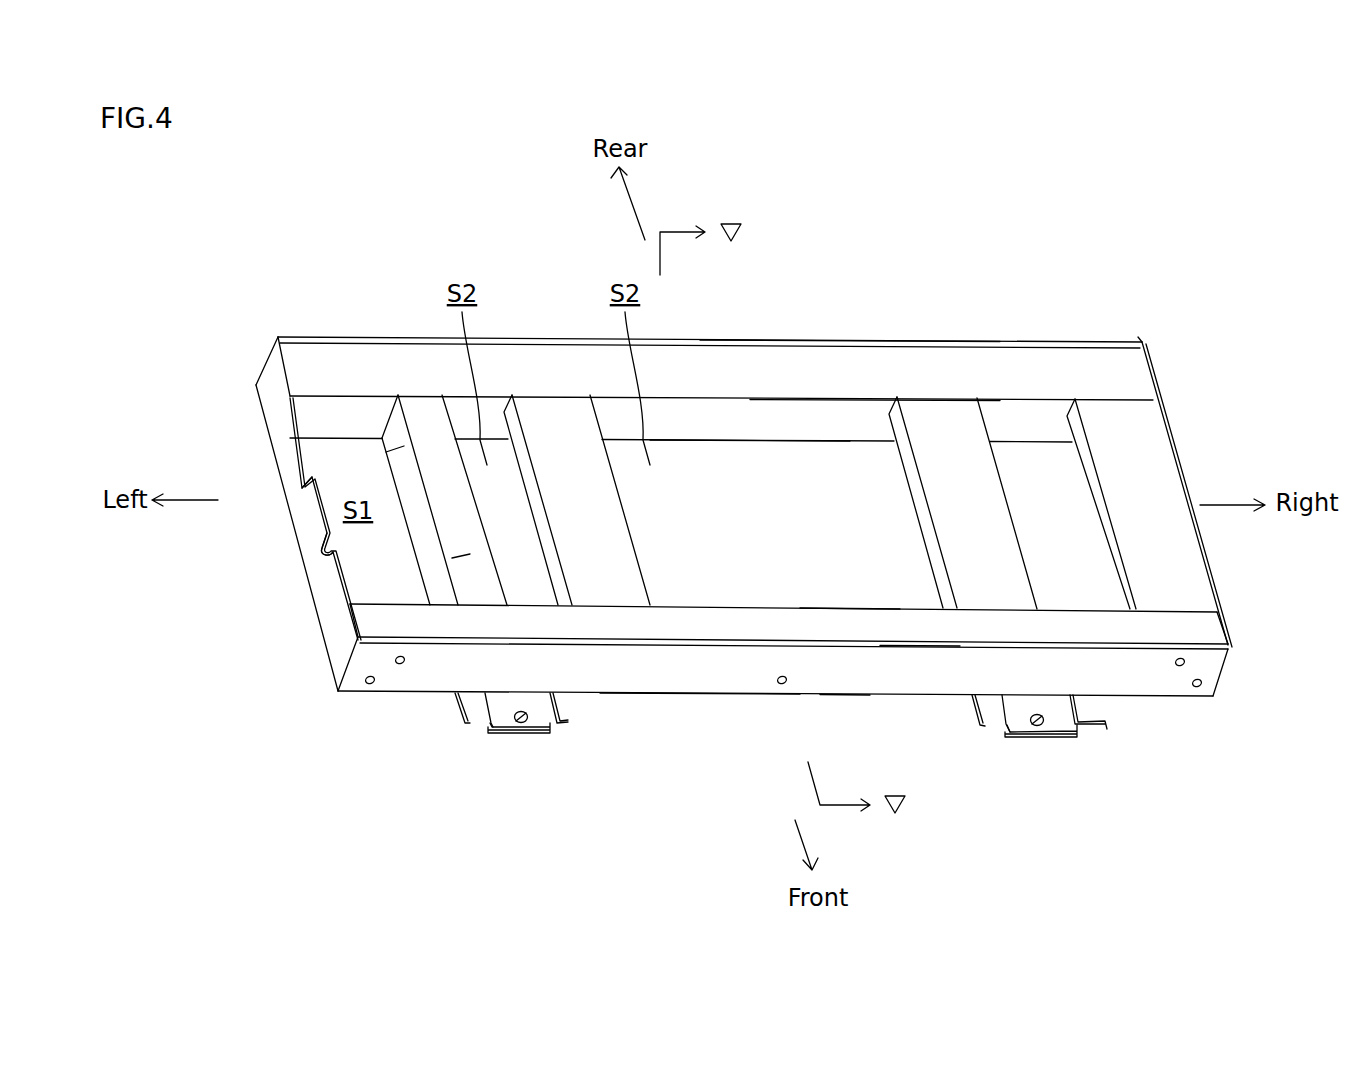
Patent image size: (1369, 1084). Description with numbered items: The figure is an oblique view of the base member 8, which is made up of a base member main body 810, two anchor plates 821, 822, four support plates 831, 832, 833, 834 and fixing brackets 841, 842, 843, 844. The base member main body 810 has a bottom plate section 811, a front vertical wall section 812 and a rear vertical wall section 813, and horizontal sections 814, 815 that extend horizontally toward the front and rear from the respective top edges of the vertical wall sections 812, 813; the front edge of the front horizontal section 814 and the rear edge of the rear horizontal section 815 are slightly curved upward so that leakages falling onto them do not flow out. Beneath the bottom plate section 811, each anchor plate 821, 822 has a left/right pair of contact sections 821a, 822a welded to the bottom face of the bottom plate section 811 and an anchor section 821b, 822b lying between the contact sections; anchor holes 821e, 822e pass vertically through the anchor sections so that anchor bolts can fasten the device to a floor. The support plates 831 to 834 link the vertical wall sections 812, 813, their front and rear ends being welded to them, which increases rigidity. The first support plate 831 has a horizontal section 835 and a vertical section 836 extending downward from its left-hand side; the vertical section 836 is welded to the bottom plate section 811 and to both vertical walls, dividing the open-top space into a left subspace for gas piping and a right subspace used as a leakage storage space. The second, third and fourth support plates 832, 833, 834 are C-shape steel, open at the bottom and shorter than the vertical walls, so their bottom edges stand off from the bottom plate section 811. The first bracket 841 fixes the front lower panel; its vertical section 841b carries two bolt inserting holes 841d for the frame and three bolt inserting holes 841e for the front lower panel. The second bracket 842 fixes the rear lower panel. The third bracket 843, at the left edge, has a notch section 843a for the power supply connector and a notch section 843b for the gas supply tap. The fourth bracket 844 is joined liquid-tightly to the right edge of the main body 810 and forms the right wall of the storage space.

The base member 8 is at (297, 451).
The base member main body 810 is at (872, 357).
The bottom plate section 811 is at (700, 582).
The front vertical wall section 812 is at (846, 606).
The rear vertical wall section 813 is at (766, 422).
The front horizontal section 814 is at (915, 626).
The rear horizontal section 815 is at (742, 366).
The anchor plate 821 is at (527, 748).
The contact sections 821a is at (468, 712).
The anchor section 821b is at (505, 720).
The anchor hole 821e is at (520, 722).
The anchor plate 822 is at (1060, 750).
The contact sections 822a is at (985, 712).
The anchor section 822b is at (1030, 727).
The anchor hole 822e is at (1050, 722).
The first support plate 831 is at (432, 408).
The second support plate 832 is at (565, 408).
The third support plate 833 is at (943, 408).
The fourth support plate 834 is at (1128, 408).
The horizontal section 835 is at (470, 566).
The vertical section 836 is at (400, 460).
The first bracket 841 is at (762, 688).
The vertical section 841b is at (843, 676).
The bolt inserting holes 841d is at (394, 661).
The bolt inserting holes 841e is at (368, 684).
The second bracket 842 is at (809, 331).
The third bracket 843 is at (294, 524).
The notch section 843a is at (309, 486).
The notch section 843b is at (330, 553).
The fourth bracket 844 is at (1183, 428).